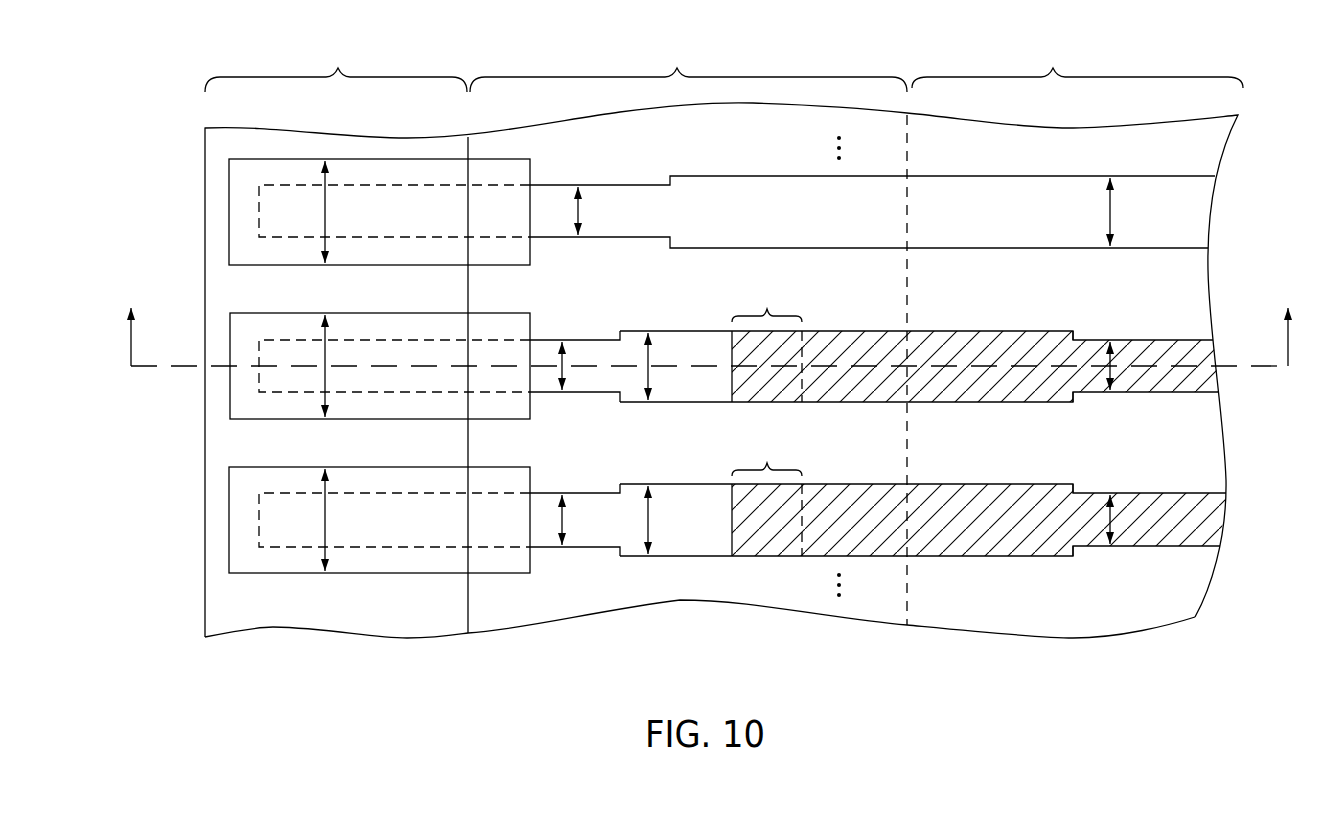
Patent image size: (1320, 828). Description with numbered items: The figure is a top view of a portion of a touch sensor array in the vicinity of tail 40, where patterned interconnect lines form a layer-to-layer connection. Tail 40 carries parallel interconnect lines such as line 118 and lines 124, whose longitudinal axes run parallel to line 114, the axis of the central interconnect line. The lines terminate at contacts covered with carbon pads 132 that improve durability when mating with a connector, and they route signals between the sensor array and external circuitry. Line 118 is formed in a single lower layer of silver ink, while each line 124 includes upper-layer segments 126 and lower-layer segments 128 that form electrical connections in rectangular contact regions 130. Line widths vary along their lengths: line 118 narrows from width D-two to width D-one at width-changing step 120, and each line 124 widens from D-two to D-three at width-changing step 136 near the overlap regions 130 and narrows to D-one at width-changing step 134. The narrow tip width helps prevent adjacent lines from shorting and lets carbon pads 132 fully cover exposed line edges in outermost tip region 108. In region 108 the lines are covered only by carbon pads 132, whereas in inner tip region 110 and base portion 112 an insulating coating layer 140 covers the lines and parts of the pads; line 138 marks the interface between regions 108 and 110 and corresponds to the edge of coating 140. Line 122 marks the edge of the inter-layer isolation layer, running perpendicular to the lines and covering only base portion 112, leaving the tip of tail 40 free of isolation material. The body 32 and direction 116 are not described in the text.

The component body 32 is at (695, 593).
The tail 40 is at (462, 668).
The outermost tip region 108 is at (336, 65).
The inner tip region 110 is at (688, 65).
The base portion 112 is at (1077, 63).
The longitudinal axis 114 is at (170, 370).
The direction 116 is at (131, 338).
The single-layer interconnect line 118 is at (1032, 165).
The width-changing step 120 is at (677, 160).
The edge of inter-layer isolation layer 122 is at (909, 145).
The multilayer interconnect line 124 is at (1015, 307).
The upper layer line segment 126 is at (995, 392).
The lower layer line segment 128 is at (685, 330).
The contact region 130 is at (767, 419).
The carbon pad 132 is at (385, 257).
The width-changing step 134 is at (620, 316).
The width-changing step 136 is at (1082, 320).
The interface line 138 is at (468, 612).
The insulating coating layer 140 is at (598, 612).